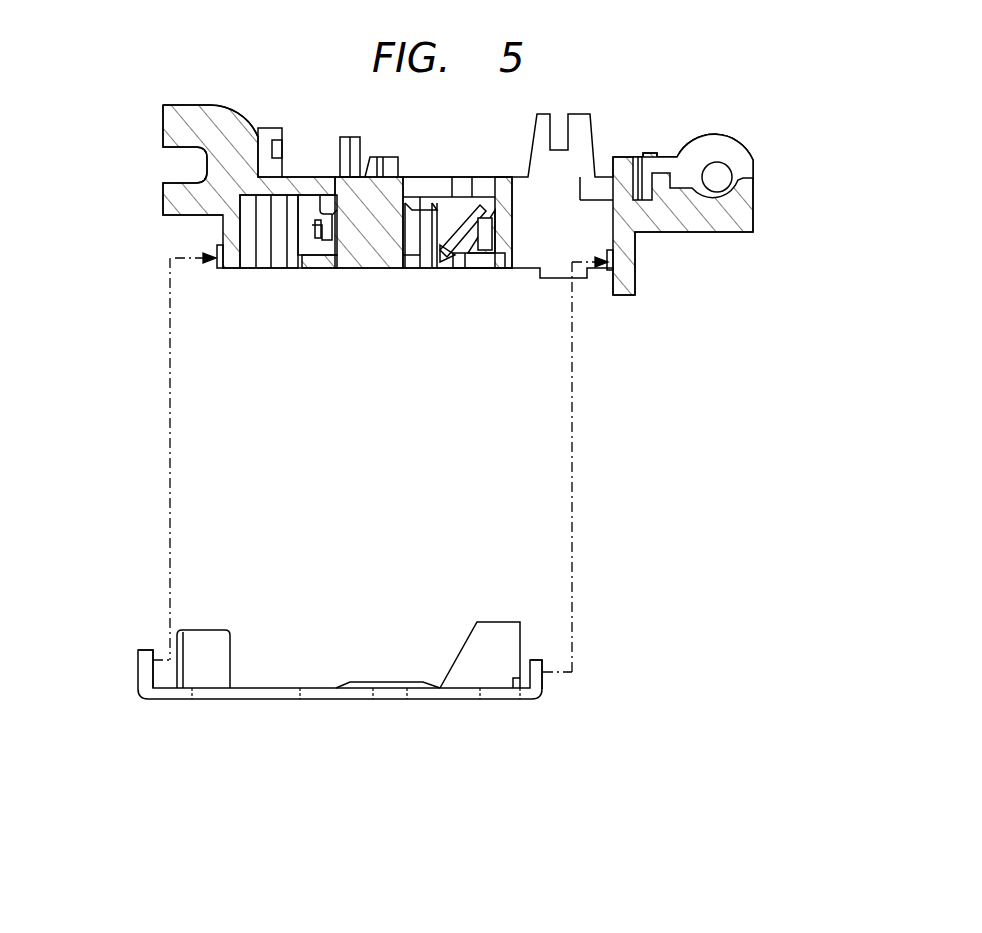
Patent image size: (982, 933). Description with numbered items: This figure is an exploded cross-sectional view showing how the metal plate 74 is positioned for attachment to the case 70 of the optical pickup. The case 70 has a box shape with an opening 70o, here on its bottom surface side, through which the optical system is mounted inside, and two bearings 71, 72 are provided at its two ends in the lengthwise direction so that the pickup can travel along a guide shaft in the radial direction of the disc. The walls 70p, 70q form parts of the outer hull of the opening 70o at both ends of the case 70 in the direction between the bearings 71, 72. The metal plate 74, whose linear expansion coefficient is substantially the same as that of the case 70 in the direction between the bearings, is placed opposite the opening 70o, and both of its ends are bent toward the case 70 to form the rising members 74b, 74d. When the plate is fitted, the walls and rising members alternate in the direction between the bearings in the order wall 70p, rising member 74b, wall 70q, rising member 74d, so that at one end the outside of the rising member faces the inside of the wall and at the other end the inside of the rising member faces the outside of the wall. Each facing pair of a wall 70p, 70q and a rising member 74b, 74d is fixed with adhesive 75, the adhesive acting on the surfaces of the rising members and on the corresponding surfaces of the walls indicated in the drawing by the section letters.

The case 70 is at (752, 218).
The opening 70o is at (433, 268).
The wall 70p is at (630, 277).
The wall 70q is at (233, 262).
The bearing 71 is at (718, 170).
The bearing 72 is at (168, 125).
The metal plate 74 is at (388, 692).
The rising member 74b is at (522, 678).
The rising member 74d is at (138, 670).
The adhesive 75 is at (217, 247).